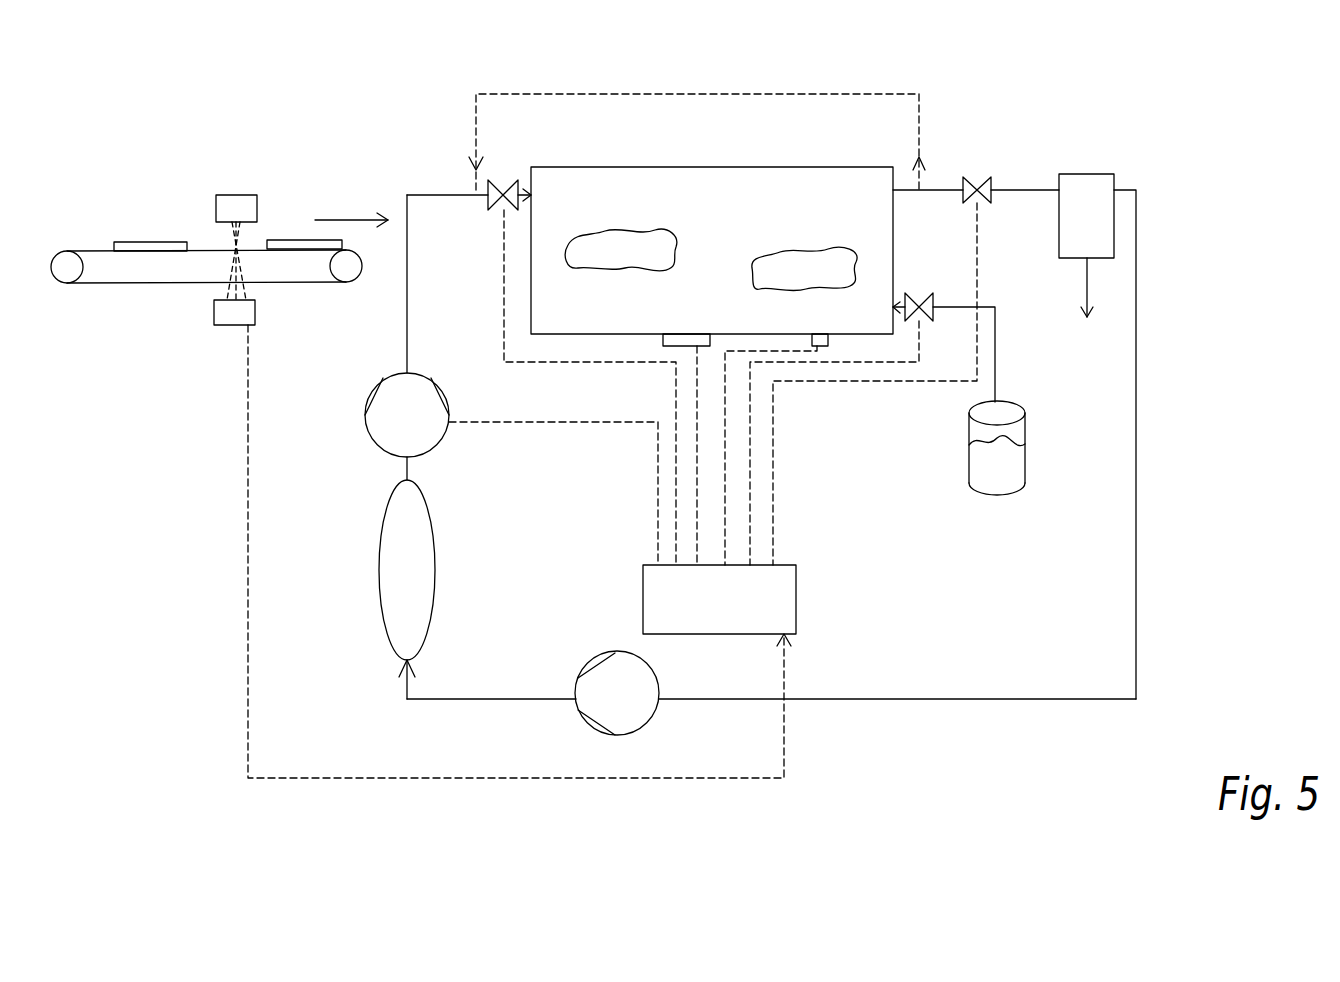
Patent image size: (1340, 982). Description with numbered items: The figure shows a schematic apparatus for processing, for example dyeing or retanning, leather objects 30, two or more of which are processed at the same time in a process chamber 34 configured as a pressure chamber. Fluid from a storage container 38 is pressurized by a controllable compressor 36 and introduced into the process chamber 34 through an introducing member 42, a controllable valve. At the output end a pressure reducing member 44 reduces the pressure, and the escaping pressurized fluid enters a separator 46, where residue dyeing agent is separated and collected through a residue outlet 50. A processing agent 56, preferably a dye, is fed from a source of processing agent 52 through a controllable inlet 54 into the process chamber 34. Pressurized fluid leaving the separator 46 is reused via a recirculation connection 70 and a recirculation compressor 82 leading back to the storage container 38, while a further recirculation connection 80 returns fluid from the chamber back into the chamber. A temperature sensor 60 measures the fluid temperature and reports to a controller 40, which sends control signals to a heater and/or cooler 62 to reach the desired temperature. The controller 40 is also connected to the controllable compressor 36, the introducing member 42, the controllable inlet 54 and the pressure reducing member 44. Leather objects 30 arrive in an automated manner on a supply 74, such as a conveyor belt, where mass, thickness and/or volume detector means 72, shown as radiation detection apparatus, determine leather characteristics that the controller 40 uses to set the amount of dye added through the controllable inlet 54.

The leather object 30 is at (165, 240).
The process chamber 34 is at (833, 167).
The controllable compressor 36 is at (438, 438).
The storage container 38 is at (435, 592).
The controller 40 is at (796, 592).
The introducing member 42 is at (500, 180).
The pressure reducing member 44 is at (977, 177).
The separator 46 is at (1067, 174).
The residue outlet 50 is at (1087, 288).
The source of processing agent 52 is at (1017, 487).
The controllable inlet 54 is at (922, 293).
The processing agent 56 is at (1010, 460).
The temperature sensor 60 is at (828, 342).
The heater and/or cooler 62 is at (663, 342).
The recirculation connection 70 is at (1120, 190).
The mass, thickness and/or volume detector means 72 is at (240, 180).
The supply of leather objects 74 is at (135, 290).
The recirculation connection 80 is at (663, 94).
The recirculation compressor 82 is at (648, 725).